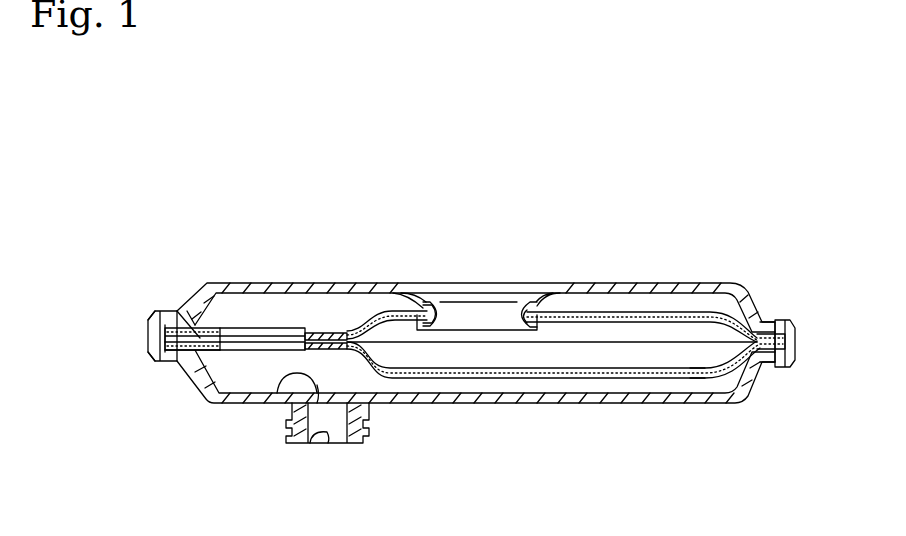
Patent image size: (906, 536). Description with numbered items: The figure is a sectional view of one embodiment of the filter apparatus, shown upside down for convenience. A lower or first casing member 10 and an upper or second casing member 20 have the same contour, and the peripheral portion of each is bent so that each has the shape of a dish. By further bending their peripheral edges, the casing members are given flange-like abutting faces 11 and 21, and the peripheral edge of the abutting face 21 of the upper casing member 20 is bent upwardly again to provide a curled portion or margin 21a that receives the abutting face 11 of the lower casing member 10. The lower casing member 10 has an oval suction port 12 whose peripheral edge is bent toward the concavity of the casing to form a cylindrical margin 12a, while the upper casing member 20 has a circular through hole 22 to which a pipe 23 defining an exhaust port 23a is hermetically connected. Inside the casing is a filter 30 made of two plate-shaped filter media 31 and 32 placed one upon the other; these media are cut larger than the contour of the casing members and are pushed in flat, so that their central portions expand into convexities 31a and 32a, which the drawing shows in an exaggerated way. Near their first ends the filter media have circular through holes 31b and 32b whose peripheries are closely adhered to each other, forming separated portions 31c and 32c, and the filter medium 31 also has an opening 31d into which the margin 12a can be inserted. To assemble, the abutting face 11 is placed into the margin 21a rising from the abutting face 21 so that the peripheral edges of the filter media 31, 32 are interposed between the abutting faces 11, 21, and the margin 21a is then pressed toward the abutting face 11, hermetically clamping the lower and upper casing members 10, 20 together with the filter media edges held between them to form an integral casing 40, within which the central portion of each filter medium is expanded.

The lower casing member 10 is at (321, 315).
The abutting face 11 is at (205, 293).
The suction port 12 is at (452, 303).
The cylindrical margin 12a is at (563, 342).
The upper casing member 20 is at (610, 400).
The abutting face 21 is at (150, 345).
The curled portion (margin) 21a is at (163, 312).
The circular through hole 22 is at (278, 380).
The pipe 23 is at (363, 440).
The exhaust port 23a is at (318, 443).
The filter 30 is at (467, 170).
The filter medium 31 is at (347, 325).
The convexity 31a is at (665, 313).
The circular through hole 31b is at (270, 326).
The separated portion 31c is at (240, 327).
The opening 31d is at (529, 310).
The filter medium 32 is at (399, 346).
The convexity 32a is at (690, 380).
The circular through hole 32b is at (290, 352).
The separated portion 32c is at (202, 368).
The integral casing 40 is at (816, 367).